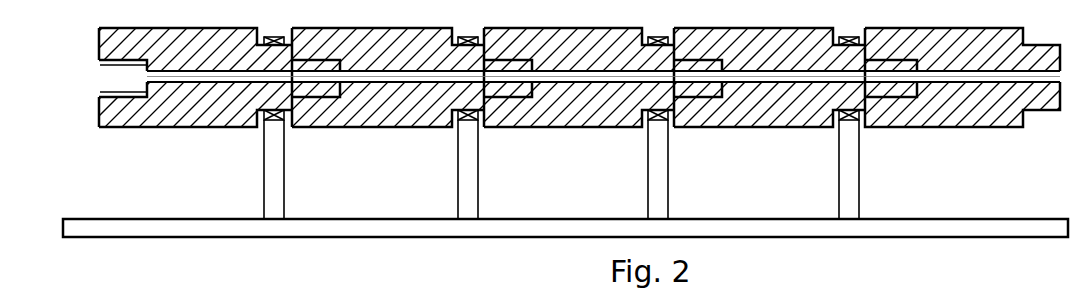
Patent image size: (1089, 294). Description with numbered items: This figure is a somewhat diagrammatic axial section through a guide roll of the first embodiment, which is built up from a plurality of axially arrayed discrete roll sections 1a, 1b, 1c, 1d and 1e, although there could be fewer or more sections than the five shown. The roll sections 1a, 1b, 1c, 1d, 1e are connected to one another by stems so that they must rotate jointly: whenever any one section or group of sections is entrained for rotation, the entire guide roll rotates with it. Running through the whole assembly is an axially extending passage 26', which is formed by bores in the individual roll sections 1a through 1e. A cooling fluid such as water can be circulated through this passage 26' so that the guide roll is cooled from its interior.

The roll section 1a is at (176, 128).
The roll section 1b is at (374, 128).
The roll section 1c is at (559, 128).
The roll section 1d is at (757, 128).
The roll section 1e is at (958, 128).
The axially extending passage 26' is at (603, 138).